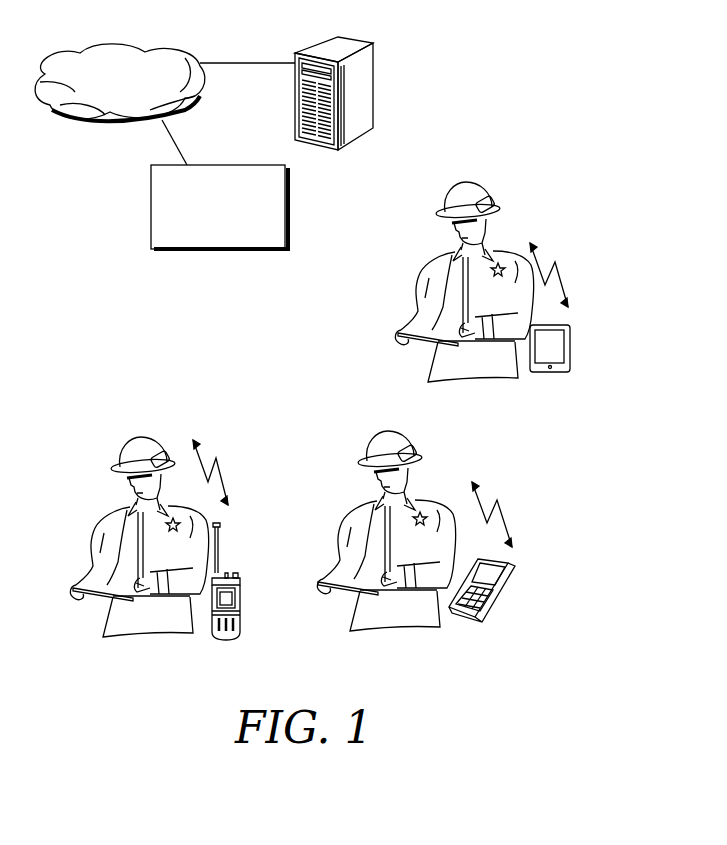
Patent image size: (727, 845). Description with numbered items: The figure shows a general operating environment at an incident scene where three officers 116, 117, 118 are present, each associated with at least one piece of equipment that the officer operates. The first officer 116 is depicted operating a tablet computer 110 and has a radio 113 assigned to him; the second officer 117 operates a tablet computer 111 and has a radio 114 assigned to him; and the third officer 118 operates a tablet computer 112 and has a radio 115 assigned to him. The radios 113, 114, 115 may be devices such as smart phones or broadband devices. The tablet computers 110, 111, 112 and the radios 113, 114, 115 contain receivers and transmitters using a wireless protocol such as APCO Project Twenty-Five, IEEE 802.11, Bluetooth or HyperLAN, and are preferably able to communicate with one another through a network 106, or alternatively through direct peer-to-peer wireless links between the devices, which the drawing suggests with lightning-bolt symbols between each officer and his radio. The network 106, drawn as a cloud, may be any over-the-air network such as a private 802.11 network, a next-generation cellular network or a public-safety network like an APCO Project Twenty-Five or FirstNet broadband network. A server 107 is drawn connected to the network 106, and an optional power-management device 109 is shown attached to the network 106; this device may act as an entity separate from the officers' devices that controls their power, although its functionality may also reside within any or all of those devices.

The network 106 is at (163, 53).
The server 107 is at (356, 36).
The power-management device 109 is at (217, 165).
The tablet computer 110 is at (103, 610).
The tablet computer 111 is at (352, 605).
The tablet computer 112 is at (435, 348).
The radio 113 is at (246, 601).
The radio 114 is at (516, 596).
The radio 115 is at (578, 348).
The officer 116 is at (87, 472).
The officer 117 is at (342, 457).
The officer 118 is at (425, 258).